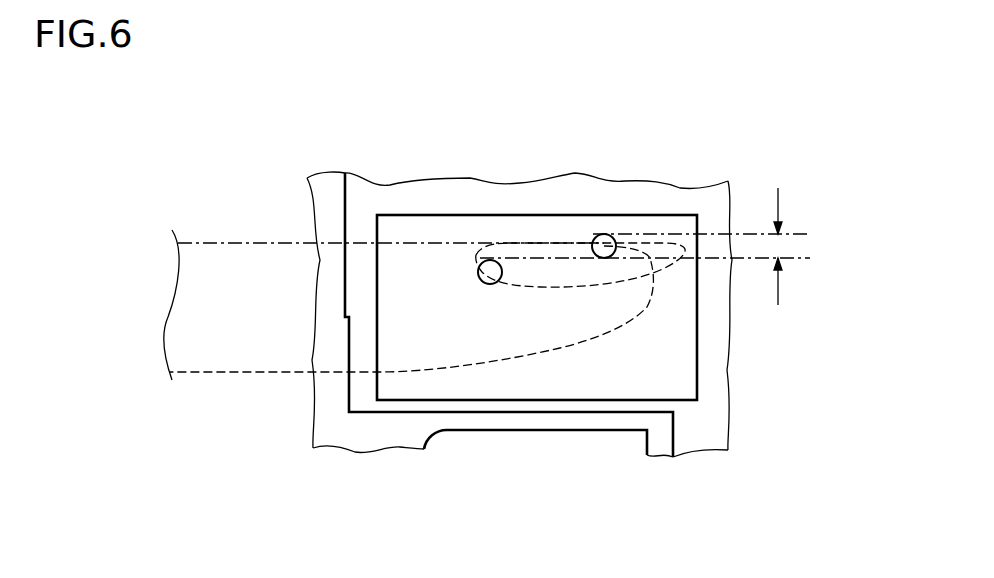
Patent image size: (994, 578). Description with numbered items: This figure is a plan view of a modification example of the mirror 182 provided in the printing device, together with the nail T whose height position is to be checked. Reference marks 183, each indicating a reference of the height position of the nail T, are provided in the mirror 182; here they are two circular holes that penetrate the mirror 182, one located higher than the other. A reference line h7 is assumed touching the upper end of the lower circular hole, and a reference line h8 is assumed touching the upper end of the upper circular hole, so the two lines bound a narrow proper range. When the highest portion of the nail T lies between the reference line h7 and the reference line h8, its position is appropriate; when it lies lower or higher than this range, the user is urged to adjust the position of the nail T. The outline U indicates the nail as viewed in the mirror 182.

The mirror 182 is at (427, 228).
The reference marks 183 is at (604, 258).
The nail T is at (532, 242).
The unit center axis U is at (178, 243).
The reference line h7 is at (708, 258).
The reference line h8 is at (675, 235).